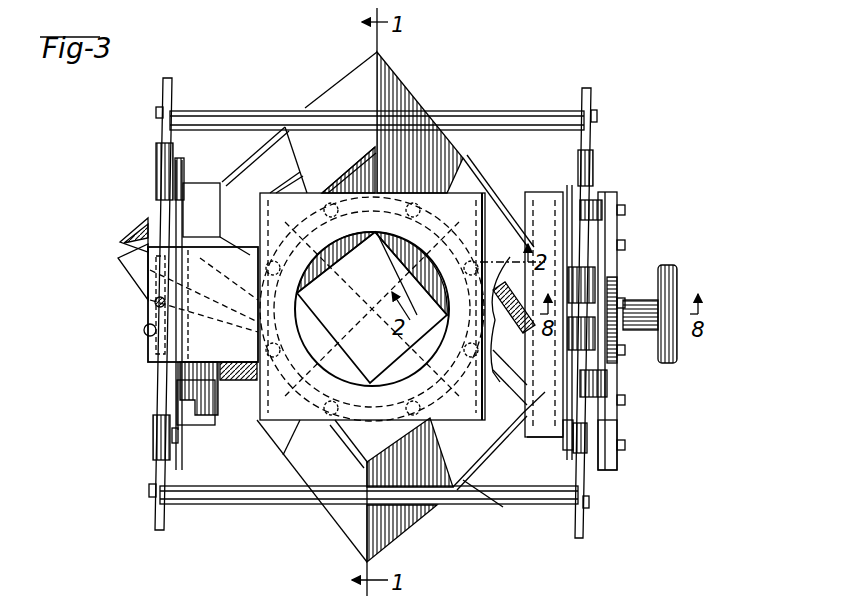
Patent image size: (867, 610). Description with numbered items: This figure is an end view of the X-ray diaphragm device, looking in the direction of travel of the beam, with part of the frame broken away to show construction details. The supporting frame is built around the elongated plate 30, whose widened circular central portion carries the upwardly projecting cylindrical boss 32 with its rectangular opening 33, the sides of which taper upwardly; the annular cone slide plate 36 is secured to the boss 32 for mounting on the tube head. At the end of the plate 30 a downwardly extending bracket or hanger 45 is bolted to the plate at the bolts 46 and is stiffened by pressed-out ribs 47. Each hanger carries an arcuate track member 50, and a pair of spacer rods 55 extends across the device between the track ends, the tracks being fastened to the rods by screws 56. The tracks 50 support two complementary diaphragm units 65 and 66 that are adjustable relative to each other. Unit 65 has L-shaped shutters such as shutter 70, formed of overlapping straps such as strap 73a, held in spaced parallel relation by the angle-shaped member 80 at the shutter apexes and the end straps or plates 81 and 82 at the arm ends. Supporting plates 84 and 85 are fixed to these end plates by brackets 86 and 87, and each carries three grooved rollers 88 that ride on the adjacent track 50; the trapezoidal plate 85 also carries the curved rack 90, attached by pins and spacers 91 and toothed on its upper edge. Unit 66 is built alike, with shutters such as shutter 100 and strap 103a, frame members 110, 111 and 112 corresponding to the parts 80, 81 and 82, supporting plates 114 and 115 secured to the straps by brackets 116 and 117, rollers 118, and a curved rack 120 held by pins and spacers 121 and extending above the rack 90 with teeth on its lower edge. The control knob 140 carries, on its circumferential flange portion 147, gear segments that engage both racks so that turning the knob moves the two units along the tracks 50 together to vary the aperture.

The elongated plate 30 is at (200, 356).
The cylindrical boss 32 is at (372, 309).
The rectangular opening 33 is at (330, 310).
The annular cone slide plate 36 is at (460, 203).
The bracket or hanger 45 is at (150, 352).
The bolts 46 is at (155, 303).
The pressed out stiffening ribs 47 is at (145, 331).
The track member 50 is at (172, 92).
The spacer rods 55 is at (532, 111).
The screws 56 is at (598, 116).
The diaphragm unit 65 is at (332, 70).
The diaphragm unit 66 is at (316, 522).
The shutter 70 is at (362, 170).
The strap 73a is at (267, 148).
The angle-shaped member 80 is at (402, 80).
The strap or plate 81 is at (135, 276).
The strap or plate 82 is at (520, 404).
The supporting plate 84 is at (178, 402).
The supporting plate 85 is at (565, 442).
The bracket 86 is at (526, 432).
The bracket 87 is at (197, 420).
The grooved rollers 88 is at (153, 452).
The curved rack 90 is at (614, 442).
The pins and spacers 91 is at (602, 393).
The shutter 100 is at (360, 440).
The strap 103a is at (478, 492).
The frame member 110 is at (405, 520).
The frame member 111 is at (520, 312).
The frame member 112 is at (140, 234).
The plate 114 is at (184, 164).
The plate 115 is at (567, 200).
The bracket 116 is at (542, 200).
The bracket 117 is at (221, 195).
The rollers 118 is at (156, 158).
The curved rack 120 is at (617, 230).
The pins and spacers 121 is at (604, 212).
The control knob 140 is at (677, 272).
The circumferential flange portion 147 is at (622, 338).